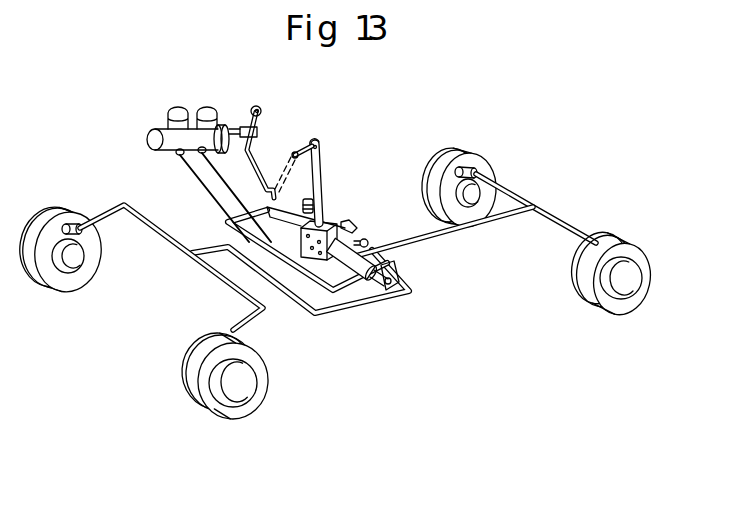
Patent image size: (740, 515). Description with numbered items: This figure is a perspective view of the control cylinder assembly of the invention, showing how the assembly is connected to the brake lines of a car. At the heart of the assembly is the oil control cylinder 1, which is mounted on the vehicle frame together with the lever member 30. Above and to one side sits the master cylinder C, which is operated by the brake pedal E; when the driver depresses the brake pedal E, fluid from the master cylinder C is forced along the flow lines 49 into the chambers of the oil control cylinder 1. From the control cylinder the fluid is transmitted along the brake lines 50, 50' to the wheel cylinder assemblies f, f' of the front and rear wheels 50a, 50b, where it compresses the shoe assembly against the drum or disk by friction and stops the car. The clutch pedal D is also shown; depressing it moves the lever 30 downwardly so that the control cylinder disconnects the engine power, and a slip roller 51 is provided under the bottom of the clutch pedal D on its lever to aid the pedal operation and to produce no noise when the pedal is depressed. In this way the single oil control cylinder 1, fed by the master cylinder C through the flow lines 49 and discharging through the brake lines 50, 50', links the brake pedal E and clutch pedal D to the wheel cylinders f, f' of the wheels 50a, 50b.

The wheel cylinder assembly f is at (138, 240).
The wheel cylinder assembly f' is at (507, 168).
The master cylinder C is at (161, 133).
The brake pedal E is at (256, 155).
The clutch pedal D is at (319, 170).
The slip roller 51 is at (313, 208).
The oil control cylinder 1 is at (363, 266).
The lever member 30 is at (228, 222).
The flow lines 49 is at (220, 186).
The brake line 50 is at (300, 305).
The brake line 50' is at (442, 250).
The front wheel 50a is at (236, 393).
The rear wheel 50b is at (632, 292).